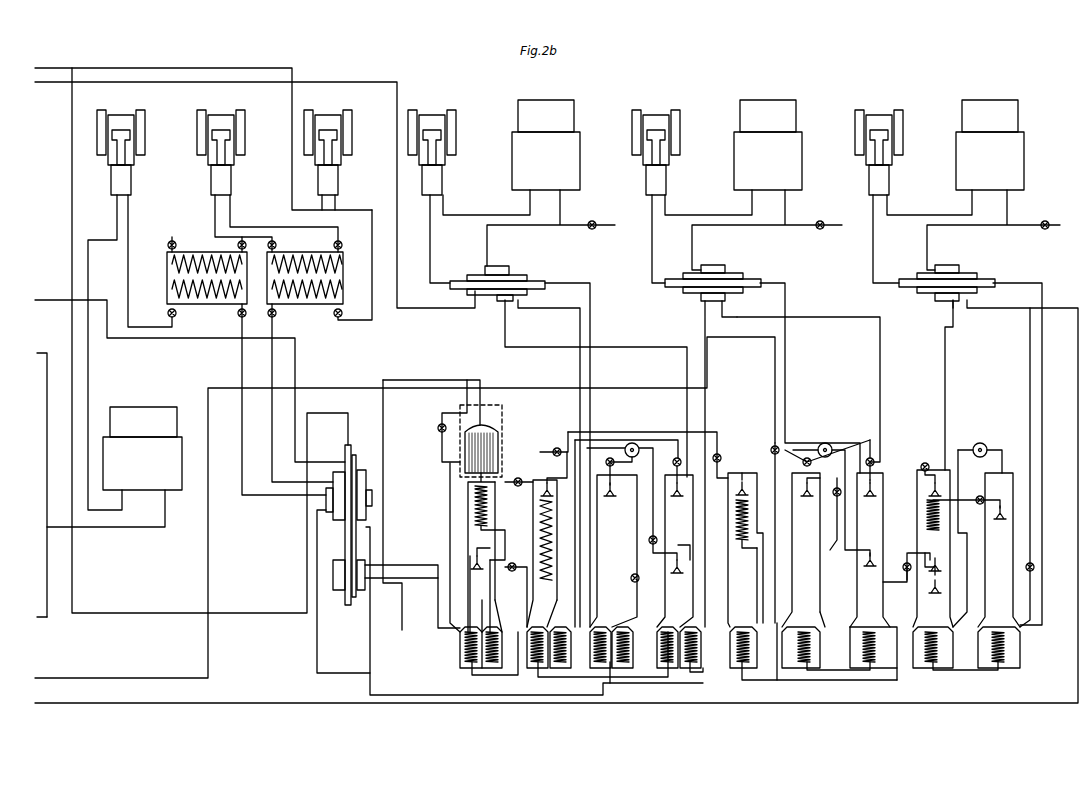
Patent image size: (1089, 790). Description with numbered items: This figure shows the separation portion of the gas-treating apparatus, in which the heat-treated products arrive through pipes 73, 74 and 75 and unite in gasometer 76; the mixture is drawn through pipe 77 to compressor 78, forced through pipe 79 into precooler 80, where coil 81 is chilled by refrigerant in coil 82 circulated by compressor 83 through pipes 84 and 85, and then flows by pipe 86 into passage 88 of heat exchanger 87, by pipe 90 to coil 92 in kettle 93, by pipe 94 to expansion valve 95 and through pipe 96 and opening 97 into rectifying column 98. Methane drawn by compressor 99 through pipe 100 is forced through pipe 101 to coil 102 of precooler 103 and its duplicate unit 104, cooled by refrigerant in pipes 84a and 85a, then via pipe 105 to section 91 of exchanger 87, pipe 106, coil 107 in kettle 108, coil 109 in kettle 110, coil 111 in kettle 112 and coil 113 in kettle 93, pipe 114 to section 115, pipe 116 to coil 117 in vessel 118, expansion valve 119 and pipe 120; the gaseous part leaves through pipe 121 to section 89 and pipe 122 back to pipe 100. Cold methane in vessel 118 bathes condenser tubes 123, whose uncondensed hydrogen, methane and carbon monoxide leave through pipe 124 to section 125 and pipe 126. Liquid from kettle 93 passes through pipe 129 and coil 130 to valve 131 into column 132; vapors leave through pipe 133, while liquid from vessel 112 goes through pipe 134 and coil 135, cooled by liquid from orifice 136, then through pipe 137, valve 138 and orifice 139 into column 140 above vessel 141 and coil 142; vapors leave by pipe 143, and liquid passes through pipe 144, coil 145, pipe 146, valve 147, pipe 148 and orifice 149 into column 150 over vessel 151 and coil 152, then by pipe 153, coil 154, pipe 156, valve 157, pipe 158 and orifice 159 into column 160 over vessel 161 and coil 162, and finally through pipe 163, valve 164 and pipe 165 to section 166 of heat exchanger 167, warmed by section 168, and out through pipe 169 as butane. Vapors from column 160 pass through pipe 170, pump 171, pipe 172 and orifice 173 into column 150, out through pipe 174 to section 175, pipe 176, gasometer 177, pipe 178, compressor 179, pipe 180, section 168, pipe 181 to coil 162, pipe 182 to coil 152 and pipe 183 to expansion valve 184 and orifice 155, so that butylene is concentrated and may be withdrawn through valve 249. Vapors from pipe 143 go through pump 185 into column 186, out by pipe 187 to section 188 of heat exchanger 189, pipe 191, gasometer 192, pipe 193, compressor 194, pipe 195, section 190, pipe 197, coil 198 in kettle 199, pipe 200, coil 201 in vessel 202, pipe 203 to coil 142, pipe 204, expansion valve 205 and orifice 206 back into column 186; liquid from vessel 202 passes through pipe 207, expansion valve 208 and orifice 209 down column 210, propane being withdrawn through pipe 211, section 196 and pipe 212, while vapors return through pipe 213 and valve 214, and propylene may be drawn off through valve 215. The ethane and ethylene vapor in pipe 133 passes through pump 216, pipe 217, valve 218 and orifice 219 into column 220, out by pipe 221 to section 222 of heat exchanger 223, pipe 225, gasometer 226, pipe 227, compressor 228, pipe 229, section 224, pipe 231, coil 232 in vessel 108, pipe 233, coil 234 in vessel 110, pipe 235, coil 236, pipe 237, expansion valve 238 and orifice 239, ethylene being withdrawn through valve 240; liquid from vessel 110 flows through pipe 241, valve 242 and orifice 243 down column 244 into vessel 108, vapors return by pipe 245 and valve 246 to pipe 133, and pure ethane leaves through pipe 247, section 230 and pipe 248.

The pipe 73 is at (42, 353).
The pipe 74 is at (42, 492).
The pipe 75 is at (38, 617).
The gasometer 76 is at (182, 476).
The pipe 77 is at (88, 372).
The compressor 78 is at (133, 184).
The pipe 79 is at (128, 262).
The precooler 80 is at (167, 287).
The coil 81 is at (215, 300).
The coil 82 is at (205, 254).
The compressor 83 is at (233, 184).
The pipe 84 is at (232, 213).
The pipe 84a is at (300, 228).
The pipe 85 is at (214, 213).
The pipe 85a is at (282, 243).
The pipe 86 is at (242, 367).
The heat exchanger 87 is at (373, 499).
The passage 88 is at (326, 504).
The section 89 is at (351, 447).
The pipe 90 is at (317, 650).
The section 91 is at (372, 470).
The coil 92 is at (498, 652).
The kettle 93 is at (460, 645).
The pipe 94 is at (490, 592).
The expansion valve 95 is at (520, 564).
The pipe 96 is at (489, 552).
The opening 97 is at (480, 566).
The rectifying column 98 is at (450, 493).
The compressor 99 is at (340, 184).
The pipe 100 is at (142, 70).
The pipe 101 is at (375, 312).
The coil 102 is at (292, 306).
The precooler 103 is at (333, 268).
The transformer 104 is at (346, 244).
The pipe 105 is at (272, 430).
The pipe 106 is at (380, 530).
The coil 107 is at (620, 642).
The kettle 108 is at (590, 652).
The coil 109 is at (620, 653).
The kettle 110 is at (690, 650).
The coil 111 is at (498, 615).
The kettle 112 is at (555, 647).
The coil 113 is at (465, 658).
The pipe 114 is at (438, 615).
The section 115 is at (333, 575).
The pipe 116 is at (435, 583).
The coil 117 is at (498, 452).
The vessel 118 is at (502, 410).
The expansion valve 119 is at (438, 432).
The pipe 120 is at (462, 396).
The pipe 121 is at (433, 396).
The pipe 122 is at (72, 212).
The condenser tubes 123 is at (490, 438).
The pipe 124 is at (348, 415).
The section 125 is at (362, 456).
The pipe 126 is at (58, 299).
The pipe 129 is at (505, 528).
The coil 130 is at (470, 515).
The expansion valve 131 is at (533, 478).
The column 132 is at (543, 607).
The pipe 133 is at (546, 444).
The pipe 134 is at (520, 580).
The coil 135 is at (546, 534).
The orifice 136 is at (540, 492).
The pipe 137 is at (642, 426).
The valve 138 is at (705, 462).
The orifice 139 is at (748, 490).
The column 140 is at (728, 576).
The vessel 141 is at (718, 660).
The coil 142 is at (813, 653).
The pipe 143 is at (736, 470).
The pipe 144 is at (750, 532).
The coil 145 is at (728, 520).
The pipe 146 is at (803, 690).
The valve 147 is at (900, 552).
The pipe 148 is at (931, 560).
The orifice 149 is at (945, 570).
The column 150 is at (950, 604).
The vessel 151 is at (913, 673).
The coil 152 is at (940, 645).
The pipe 153 is at (955, 588).
The coil 154 is at (917, 510).
The orifice 155 is at (920, 488).
The pipe 156 is at (966, 494).
The valve 157 is at (991, 550).
The pipe 158 is at (1010, 504).
The orifice 159 is at (1001, 526).
The column 160 is at (1013, 548).
The vessel 161 is at (1020, 663).
The coil 162 is at (1008, 648).
The pipe 163 is at (1030, 597).
The valve 164 is at (1034, 567).
The pipe 165 is at (1030, 462).
The section 166 is at (940, 265).
The heat exchanger 167 is at (953, 277).
The section 168 is at (899, 286).
The pipe 169 is at (222, 701).
The pipe 170 is at (1004, 458).
The pump 171 is at (970, 443).
The pipe 172 is at (962, 463).
The orifice 173 is at (927, 596).
The pipe 174 is at (945, 398).
The section 175 is at (935, 295).
The pipe 176 is at (927, 242).
The gasometer 177 is at (1025, 160).
The pipe 178 is at (940, 216).
The compressor 179 is at (891, 184).
The pipe 180 is at (873, 256).
The pipe 181 is at (1044, 400).
The pipe 182 is at (948, 672).
The pipe 183 is at (883, 582).
The expansion valve 184 is at (928, 462).
The pump 185 is at (818, 440).
The column 186 is at (890, 532).
The pipe 187 is at (880, 404).
The section 188 is at (740, 275).
The heat exchanger 189 is at (710, 446).
The section 190 is at (765, 281).
The pipe 191 is at (682, 252).
The gasometer 192 is at (803, 172).
The pipe 193 is at (690, 215).
The compressor 194 is at (668, 184).
The pipe 195 is at (653, 258).
The section 196 is at (722, 266).
The pipe 197 is at (787, 298).
The coil 198 is at (818, 655).
The kettle 199 is at (814, 672).
The pipe 200 is at (836, 680).
The coil 201 is at (885, 624).
The vessel 202 is at (876, 675).
The pipe 203 is at (795, 683).
The pipe 204 is at (706, 555).
The expansion valve 205 is at (874, 466).
The orifice 206 is at (870, 550).
The pipe 207 is at (883, 603).
The expansion valve 208 is at (833, 538).
The orifice 209 is at (801, 550).
The column 210 is at (805, 556).
The pipe 211 is at (855, 378).
The pipe 212 is at (322, 390).
The pipe 213 is at (872, 443).
The valve 214 is at (775, 438).
The valve 215 is at (815, 220).
The pump 216 is at (632, 443).
The pipe 217 is at (630, 545).
The valve 218 is at (658, 538).
The orifice 219 is at (676, 573).
The column 220 is at (728, 594).
The pipe 221 is at (647, 338).
The section 222 is at (497, 256).
The heat exchanger 223 is at (520, 275).
The section 224 is at (456, 280).
The pipe 225 is at (545, 228).
The gasometer 226 is at (580, 164).
The pipe 227 is at (505, 214).
The compressor 228 is at (444, 184).
The pipe 229 is at (432, 238).
The section 230 is at (480, 262).
The pipe 231 is at (580, 402).
The coil 232 is at (603, 654).
The pipe 233 is at (640, 684).
The coil 234 is at (728, 616).
The pipe 235 is at (690, 675).
The coil 236 is at (545, 670).
The pipe 237 is at (575, 590).
The expansion valve 238 is at (670, 456).
The orifice 239 is at (675, 546).
The valve 240 is at (600, 220).
The pipe 241 is at (655, 618).
The valve 242 is at (631, 578).
The orifice 243 is at (613, 551).
The column 244 is at (630, 600).
The pipe 245 is at (612, 472).
The valve 246 is at (616, 462).
The pipe 247 is at (590, 372).
The pipe 248 is at (365, 80).
The valve 249 is at (1048, 220).